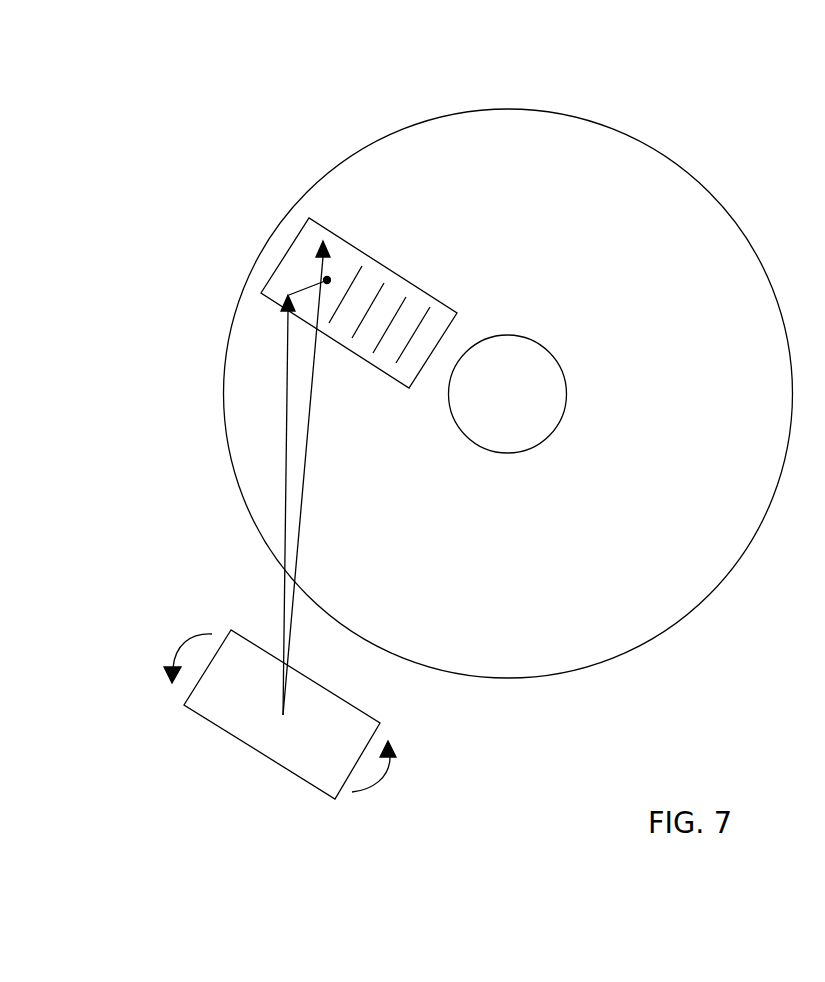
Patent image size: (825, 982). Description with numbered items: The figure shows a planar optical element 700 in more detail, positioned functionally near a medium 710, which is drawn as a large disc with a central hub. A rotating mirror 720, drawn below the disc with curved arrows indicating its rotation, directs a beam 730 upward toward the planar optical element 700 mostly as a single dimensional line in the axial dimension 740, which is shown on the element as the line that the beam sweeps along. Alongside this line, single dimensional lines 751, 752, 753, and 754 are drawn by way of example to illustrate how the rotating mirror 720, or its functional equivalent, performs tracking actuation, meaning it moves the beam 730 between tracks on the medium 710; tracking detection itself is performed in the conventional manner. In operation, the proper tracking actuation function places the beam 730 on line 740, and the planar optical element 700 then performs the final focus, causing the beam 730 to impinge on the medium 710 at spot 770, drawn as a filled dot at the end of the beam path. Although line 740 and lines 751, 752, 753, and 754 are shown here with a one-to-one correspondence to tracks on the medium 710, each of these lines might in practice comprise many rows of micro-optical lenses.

The planar optical element 700 is at (285, 253).
The medium 710 is at (257, 438).
The rotating mirror 720 is at (355, 729).
The beam 730 is at (285, 595).
The single dimensional line in the axial dimension 740 is at (310, 257).
The single dimensional line 751 is at (363, 266).
The single dimensional line 752 is at (385, 283).
The single dimensional line 753 is at (407, 298).
The single dimensional line 754 is at (431, 308).
The spot 770 is at (328, 277).